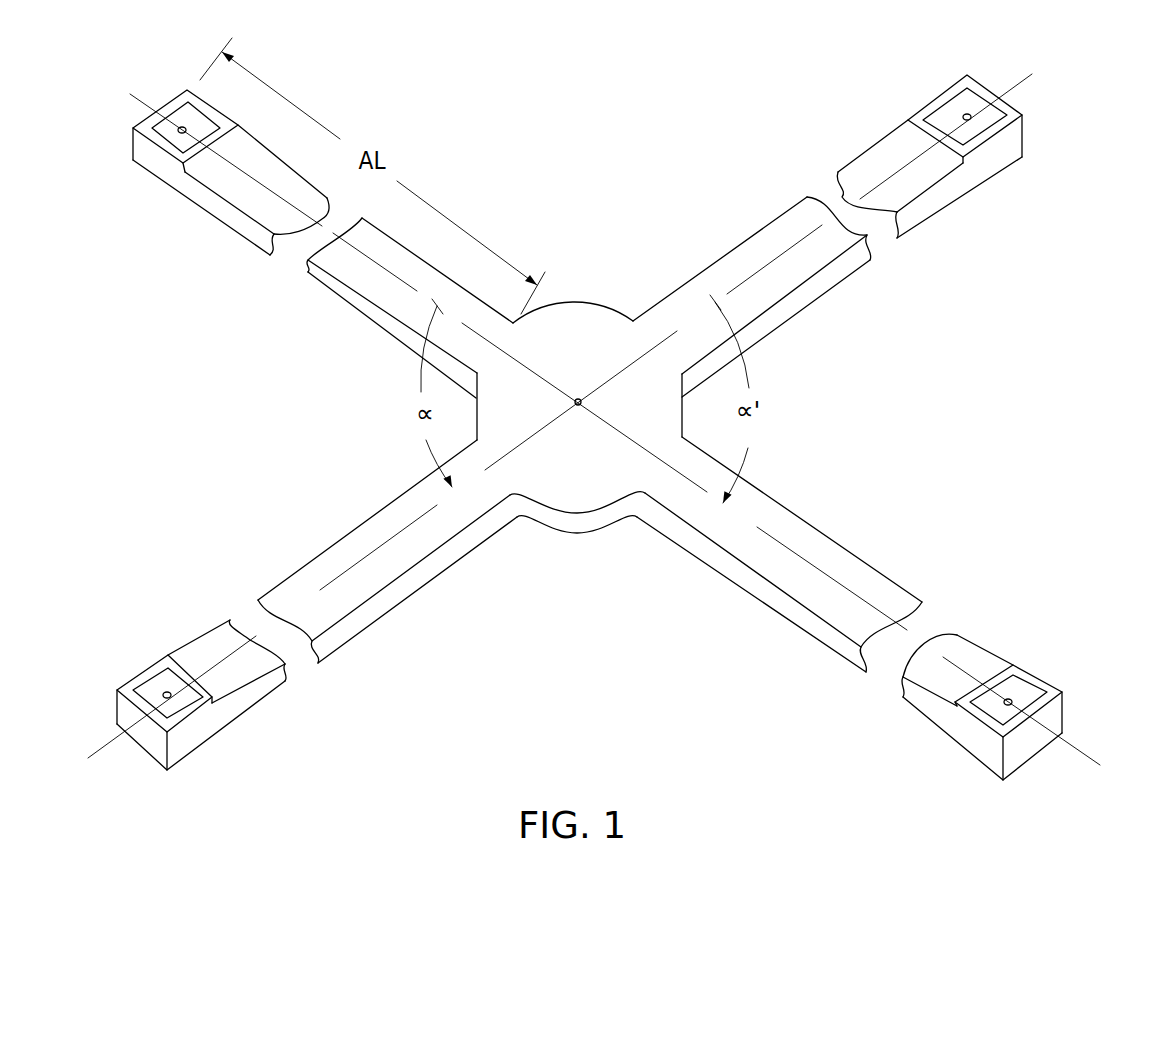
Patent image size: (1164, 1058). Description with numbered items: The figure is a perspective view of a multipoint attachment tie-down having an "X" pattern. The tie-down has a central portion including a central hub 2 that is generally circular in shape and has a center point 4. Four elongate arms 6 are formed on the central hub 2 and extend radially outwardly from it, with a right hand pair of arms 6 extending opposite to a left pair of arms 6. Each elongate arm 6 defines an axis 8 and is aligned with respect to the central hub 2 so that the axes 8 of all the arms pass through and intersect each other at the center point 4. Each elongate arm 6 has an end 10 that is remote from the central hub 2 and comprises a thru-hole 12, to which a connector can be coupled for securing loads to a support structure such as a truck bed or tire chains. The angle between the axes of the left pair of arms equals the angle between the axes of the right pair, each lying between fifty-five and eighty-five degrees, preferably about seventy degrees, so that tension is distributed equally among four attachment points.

The central hub 2 is at (577, 470).
The center point 4 is at (578, 402).
The elongate arm 6 is at (372, 317).
The axis 8 is at (1017, 86).
The end 10 is at (160, 172).
The thru-hole 12 is at (163, 692).